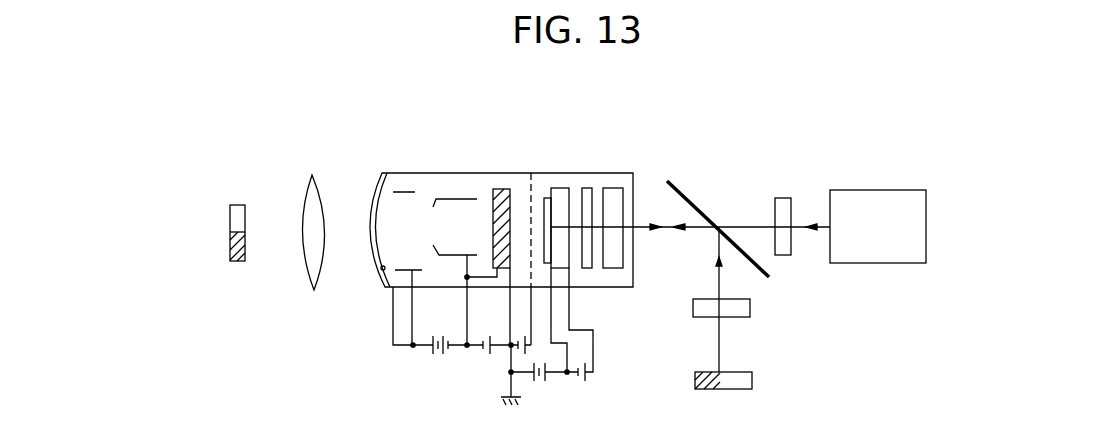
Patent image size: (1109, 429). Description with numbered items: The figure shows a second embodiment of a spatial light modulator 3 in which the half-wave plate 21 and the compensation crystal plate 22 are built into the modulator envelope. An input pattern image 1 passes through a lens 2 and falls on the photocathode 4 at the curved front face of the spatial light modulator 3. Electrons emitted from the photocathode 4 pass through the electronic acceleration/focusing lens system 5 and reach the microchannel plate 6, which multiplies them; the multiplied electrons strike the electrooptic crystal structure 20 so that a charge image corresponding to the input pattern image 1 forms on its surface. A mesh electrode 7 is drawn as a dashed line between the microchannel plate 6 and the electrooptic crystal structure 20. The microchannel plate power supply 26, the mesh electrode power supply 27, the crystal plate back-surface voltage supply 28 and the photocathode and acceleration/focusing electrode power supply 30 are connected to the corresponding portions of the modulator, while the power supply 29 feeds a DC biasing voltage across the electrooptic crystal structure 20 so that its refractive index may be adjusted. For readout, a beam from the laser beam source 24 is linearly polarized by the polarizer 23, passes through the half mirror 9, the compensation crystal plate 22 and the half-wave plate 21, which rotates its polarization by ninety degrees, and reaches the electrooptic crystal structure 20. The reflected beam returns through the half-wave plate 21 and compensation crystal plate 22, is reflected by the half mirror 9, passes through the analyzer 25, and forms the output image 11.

The input pattern image 1 is at (237, 203).
The lens 2 is at (319, 194).
The spatial light modulator 3 is at (393, 173).
The photocathode 4 is at (381, 270).
The electronic acceleration/focusing lens system 5 is at (445, 192).
The microchannel plate 6 is at (497, 188).
The mesh electrode 7 is at (531, 175).
The half mirror 9 is at (687, 192).
The output image 11 is at (752, 378).
The electrooptic crystal structure 20 is at (562, 188).
The half-wave plate 21 is at (588, 188).
The compensation crystal plate 22 is at (612, 188).
The polarizer 23 is at (782, 197).
The laser beam source 24 is at (897, 190).
The analyzer 25 is at (750, 307).
The microchannel plate power supply 26 is at (484, 358).
The mesh electrode power supply 27 is at (522, 334).
The crystal plate back-surface voltage supply 28 is at (542, 385).
The power supply 29 is at (580, 386).
The photocathode and acceleration/focusing electrode power supply 30 is at (438, 357).